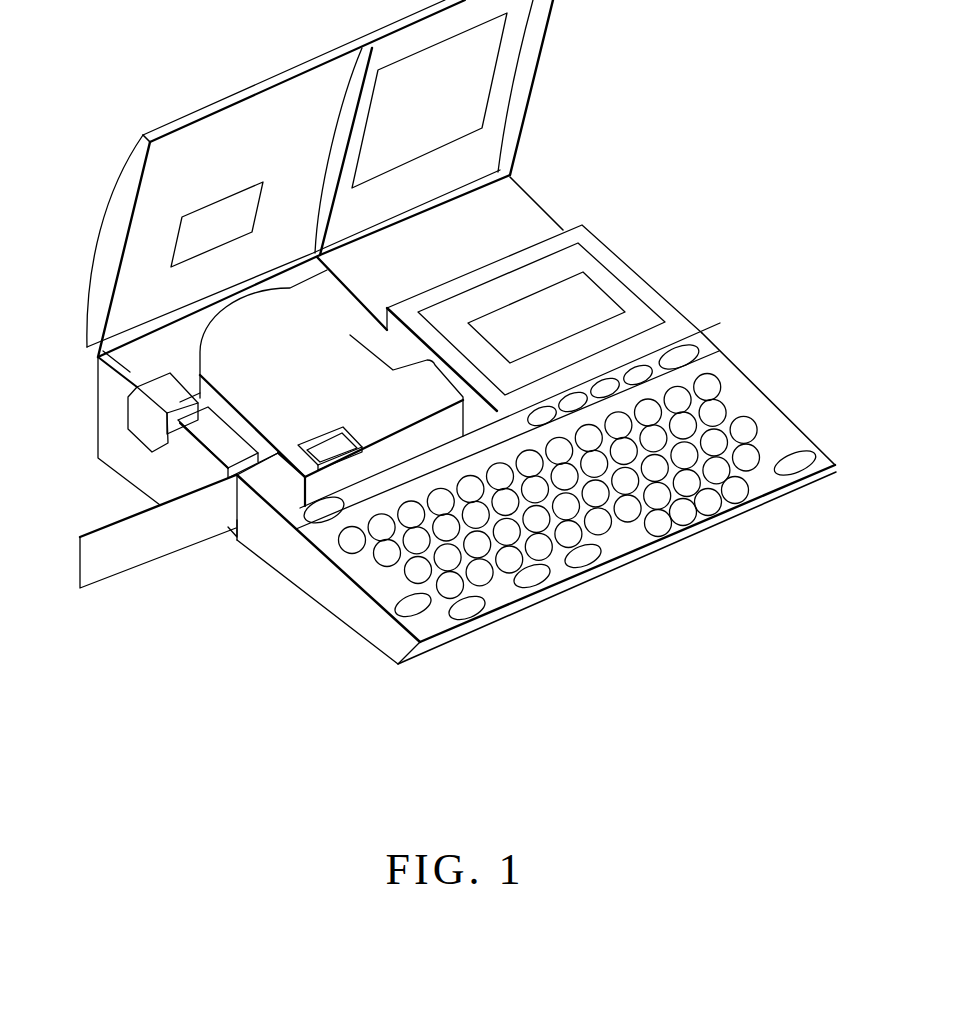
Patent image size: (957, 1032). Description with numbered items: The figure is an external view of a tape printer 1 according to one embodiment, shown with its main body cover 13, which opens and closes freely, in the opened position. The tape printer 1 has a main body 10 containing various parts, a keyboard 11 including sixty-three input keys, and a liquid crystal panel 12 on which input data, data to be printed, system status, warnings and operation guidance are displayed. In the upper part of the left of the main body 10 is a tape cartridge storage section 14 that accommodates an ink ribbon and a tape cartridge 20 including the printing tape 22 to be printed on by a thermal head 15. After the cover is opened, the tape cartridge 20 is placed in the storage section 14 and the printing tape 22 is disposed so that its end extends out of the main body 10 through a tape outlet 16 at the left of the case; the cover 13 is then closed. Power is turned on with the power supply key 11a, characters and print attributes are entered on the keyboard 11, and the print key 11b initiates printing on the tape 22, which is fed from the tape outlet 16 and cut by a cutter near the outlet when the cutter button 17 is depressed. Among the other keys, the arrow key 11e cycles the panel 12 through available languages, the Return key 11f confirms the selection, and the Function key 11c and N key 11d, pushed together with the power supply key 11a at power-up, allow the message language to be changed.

The tape printer 1 is at (742, 109).
The main body 10 is at (378, 637).
The keyboard 11 is at (767, 418).
The power supply key 11a is at (692, 352).
The print key 11b is at (305, 522).
The Function key 11c is at (475, 613).
The N key 11d is at (599, 525).
The arrow key 11e is at (662, 530).
The Return key 11f is at (797, 457).
The liquid crystal panel 12 is at (597, 298).
The main body cover 13 is at (527, 72).
The tape cartridge storage section 14 is at (193, 340).
The thermal head 15 is at (342, 443).
The tape outlet 16 is at (230, 530).
The cutter button 17 is at (137, 413).
The tape cartridge 20 is at (273, 427).
The printing tape 22 is at (95, 532).